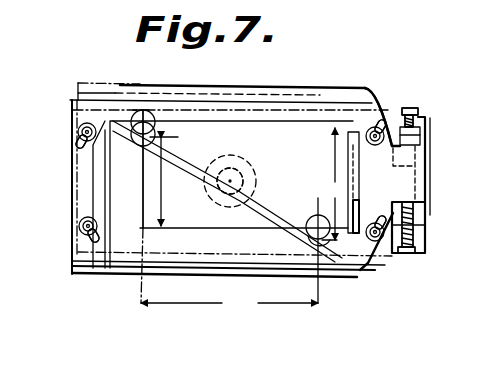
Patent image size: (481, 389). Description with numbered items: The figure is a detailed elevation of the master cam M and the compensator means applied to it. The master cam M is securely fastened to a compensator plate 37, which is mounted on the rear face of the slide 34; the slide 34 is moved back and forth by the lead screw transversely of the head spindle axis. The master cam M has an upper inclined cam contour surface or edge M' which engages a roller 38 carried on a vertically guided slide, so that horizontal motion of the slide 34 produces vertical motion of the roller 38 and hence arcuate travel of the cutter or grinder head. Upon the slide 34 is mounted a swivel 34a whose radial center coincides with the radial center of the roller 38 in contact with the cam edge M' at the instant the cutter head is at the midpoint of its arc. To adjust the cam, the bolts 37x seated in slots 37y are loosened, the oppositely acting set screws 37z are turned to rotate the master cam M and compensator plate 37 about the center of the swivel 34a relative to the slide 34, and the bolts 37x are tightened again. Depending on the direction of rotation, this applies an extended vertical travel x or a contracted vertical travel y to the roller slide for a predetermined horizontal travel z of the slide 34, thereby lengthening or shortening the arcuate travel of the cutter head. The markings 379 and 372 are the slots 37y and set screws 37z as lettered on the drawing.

The compensator plate 37 is at (379, 100).
The bolts 37x is at (79, 131).
The slots 37y is at (84, 147).
The screw retaining ears 379 is at (84, 147).
The set screws 37z is at (411, 106).
The adjusting bolts 372 is at (411, 106).
The slide 34 is at (429, 121).
The swivel 34a is at (218, 164).
The roller 38 is at (242, 177).
The master cam M is at (113, 211).
The cam contour surface M' is at (227, 191).
The extended vertical travel x is at (332, 184).
The contracted vertical travel y is at (164, 181).
The horizontal travel z is at (229, 304).